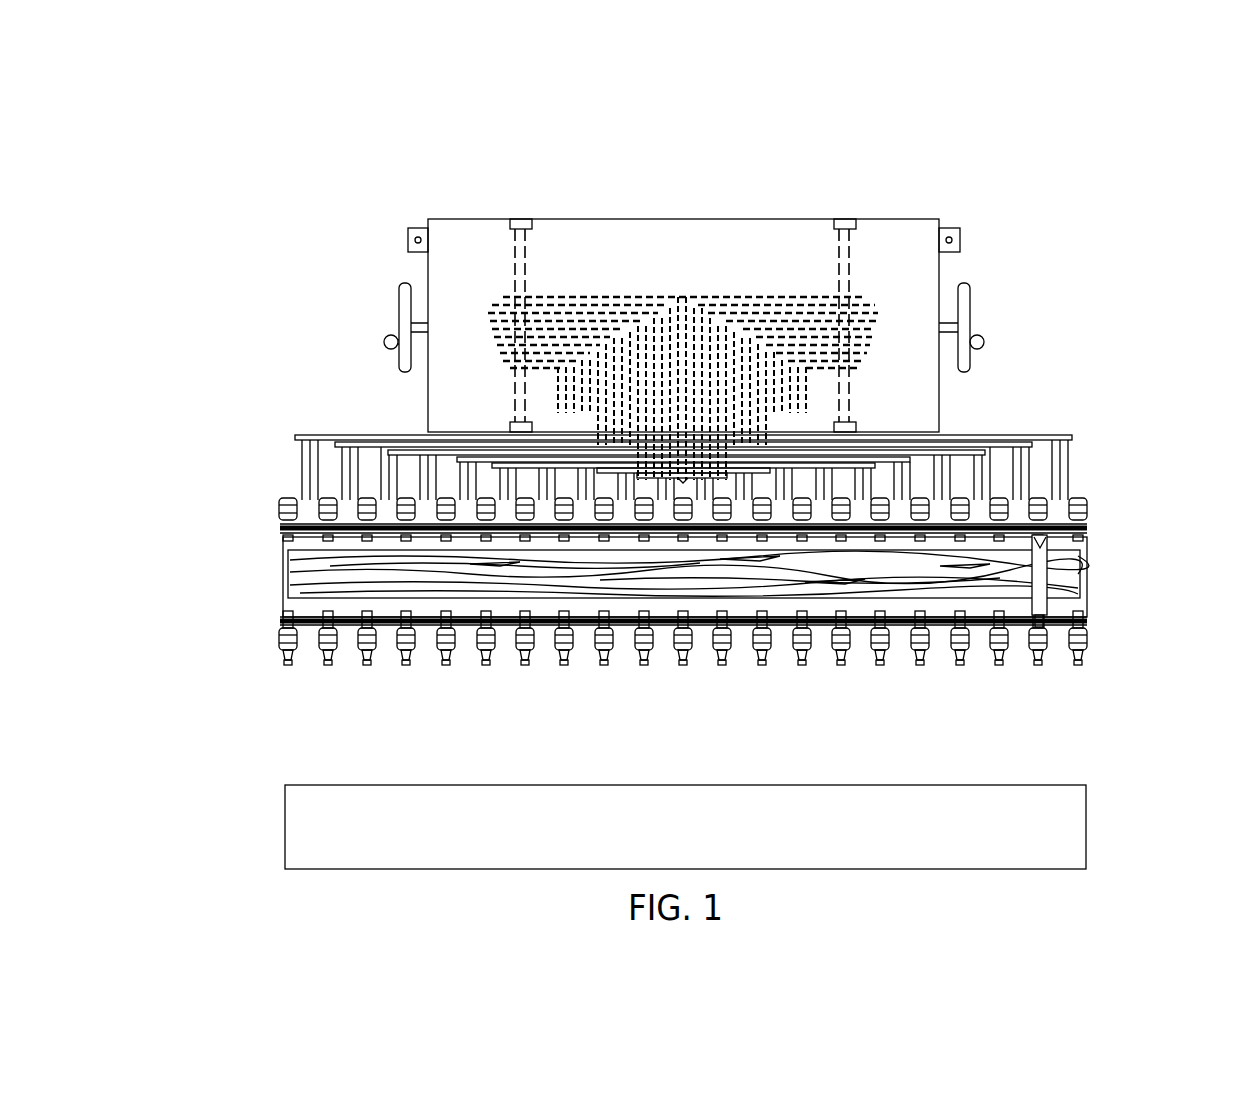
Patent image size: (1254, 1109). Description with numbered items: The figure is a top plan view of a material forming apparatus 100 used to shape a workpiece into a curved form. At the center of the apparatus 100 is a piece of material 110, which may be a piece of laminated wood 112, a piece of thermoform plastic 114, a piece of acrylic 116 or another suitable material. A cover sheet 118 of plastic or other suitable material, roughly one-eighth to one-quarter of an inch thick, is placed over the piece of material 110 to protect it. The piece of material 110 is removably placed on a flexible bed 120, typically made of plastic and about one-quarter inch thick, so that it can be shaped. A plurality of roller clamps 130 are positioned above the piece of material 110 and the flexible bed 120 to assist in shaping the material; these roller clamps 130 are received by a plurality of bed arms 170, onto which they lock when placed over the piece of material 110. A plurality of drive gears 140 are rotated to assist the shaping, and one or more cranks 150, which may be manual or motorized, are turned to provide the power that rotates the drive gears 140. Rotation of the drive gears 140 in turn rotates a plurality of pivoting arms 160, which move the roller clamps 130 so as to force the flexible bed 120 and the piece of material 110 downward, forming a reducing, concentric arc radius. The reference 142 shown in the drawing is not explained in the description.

The material forming apparatus 100 is at (373, 162).
The piece of material 110 is at (713, 524).
The piece of laminated wood 112 is at (713, 524).
The piece of thermoform plastic 114 is at (713, 524).
The piece of acrylic 116 is at (320, 573).
The cover sheet 118 is at (302, 832).
The flexible bed 120 is at (312, 607).
The roller clamps 130 is at (1040, 540).
The drive gears 140 is at (533, 327).
The spray pattern 142 is at (727, 300).
The cranks 150 is at (397, 323).
The pivoting arms 160 is at (987, 442).
The bed arms 170 is at (388, 467).